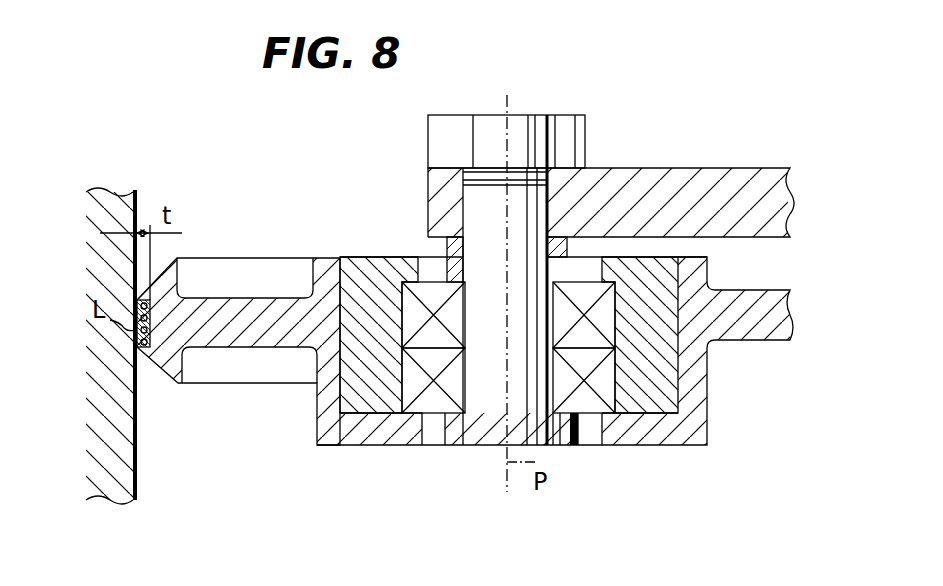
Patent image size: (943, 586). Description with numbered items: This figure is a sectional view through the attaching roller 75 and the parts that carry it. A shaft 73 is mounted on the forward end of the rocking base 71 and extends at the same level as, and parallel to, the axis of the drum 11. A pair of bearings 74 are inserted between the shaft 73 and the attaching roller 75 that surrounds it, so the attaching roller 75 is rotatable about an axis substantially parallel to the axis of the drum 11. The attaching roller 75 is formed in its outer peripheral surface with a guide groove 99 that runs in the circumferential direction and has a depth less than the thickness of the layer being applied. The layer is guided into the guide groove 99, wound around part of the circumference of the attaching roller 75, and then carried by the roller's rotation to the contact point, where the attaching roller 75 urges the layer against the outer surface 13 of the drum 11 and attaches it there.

The drum 11 is at (140, 496).
The outer surface 13 is at (138, 443).
The guide groove 99 is at (148, 352).
The rocking base 71 is at (690, 171).
The shaft 73 is at (478, 222).
The bearings 74 is at (610, 318).
The attaching roller 75 is at (367, 447).